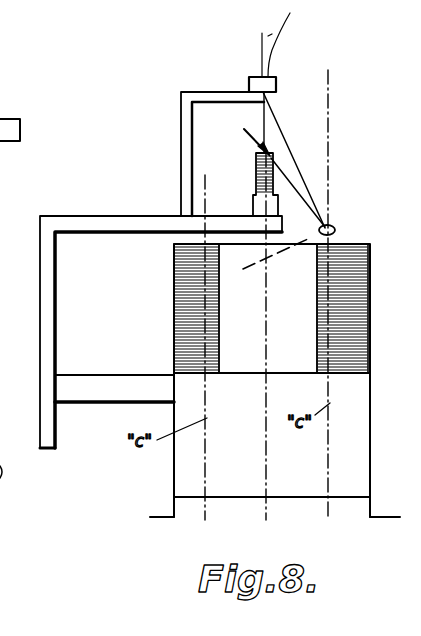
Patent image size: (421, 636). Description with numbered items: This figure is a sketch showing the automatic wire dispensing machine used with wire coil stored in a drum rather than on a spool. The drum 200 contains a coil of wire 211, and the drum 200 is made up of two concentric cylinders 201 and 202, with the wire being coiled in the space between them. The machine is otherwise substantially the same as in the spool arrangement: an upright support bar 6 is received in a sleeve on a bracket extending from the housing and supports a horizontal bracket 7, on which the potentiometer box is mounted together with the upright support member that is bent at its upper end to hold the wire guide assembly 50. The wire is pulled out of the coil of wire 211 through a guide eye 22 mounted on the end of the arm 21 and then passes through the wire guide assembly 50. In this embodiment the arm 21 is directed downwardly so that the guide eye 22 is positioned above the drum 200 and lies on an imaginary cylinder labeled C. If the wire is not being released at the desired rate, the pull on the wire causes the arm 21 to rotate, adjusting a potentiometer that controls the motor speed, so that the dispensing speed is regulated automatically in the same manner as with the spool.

The upright support bar 6 is at (40, 298).
The horizontal bracket 7 is at (133, 217).
The arm 21 is at (275, 168).
The guide eye 22 is at (335, 227).
The wire guide assembly 50 is at (276, 77).
The drum 200 is at (158, 299).
The concentric cylinder 201 is at (173, 268).
The concentric cylinder 202 is at (220, 328).
The coil of wire 211 is at (282, 127).